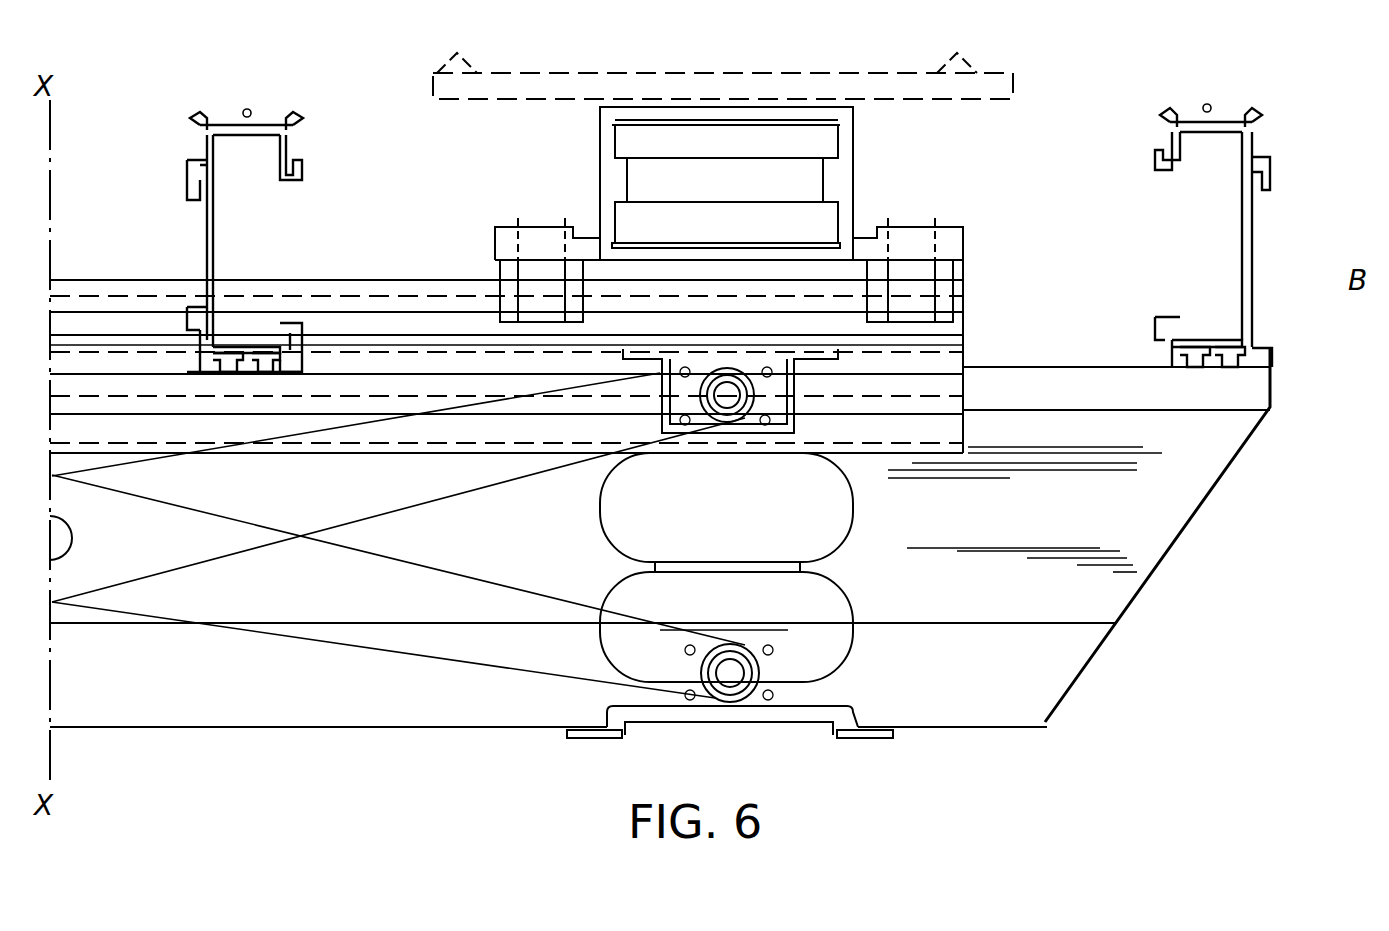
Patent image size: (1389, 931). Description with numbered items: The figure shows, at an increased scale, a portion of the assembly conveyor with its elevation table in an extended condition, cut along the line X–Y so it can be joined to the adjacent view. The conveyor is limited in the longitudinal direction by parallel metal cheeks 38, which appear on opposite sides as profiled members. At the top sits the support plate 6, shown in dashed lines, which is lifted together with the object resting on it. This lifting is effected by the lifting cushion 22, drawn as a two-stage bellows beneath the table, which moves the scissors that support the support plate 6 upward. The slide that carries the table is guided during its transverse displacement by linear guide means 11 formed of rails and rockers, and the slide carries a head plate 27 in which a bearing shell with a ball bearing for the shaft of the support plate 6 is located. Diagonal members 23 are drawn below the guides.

The support plate 6 is at (1003, 75).
The linear guide means 11 is at (960, 301).
The lifting cushion 22 is at (827, 538).
The diagonal cross braces 23 is at (438, 490).
The head plate 27 is at (963, 241).
The metal cheeks 38 is at (302, 178).